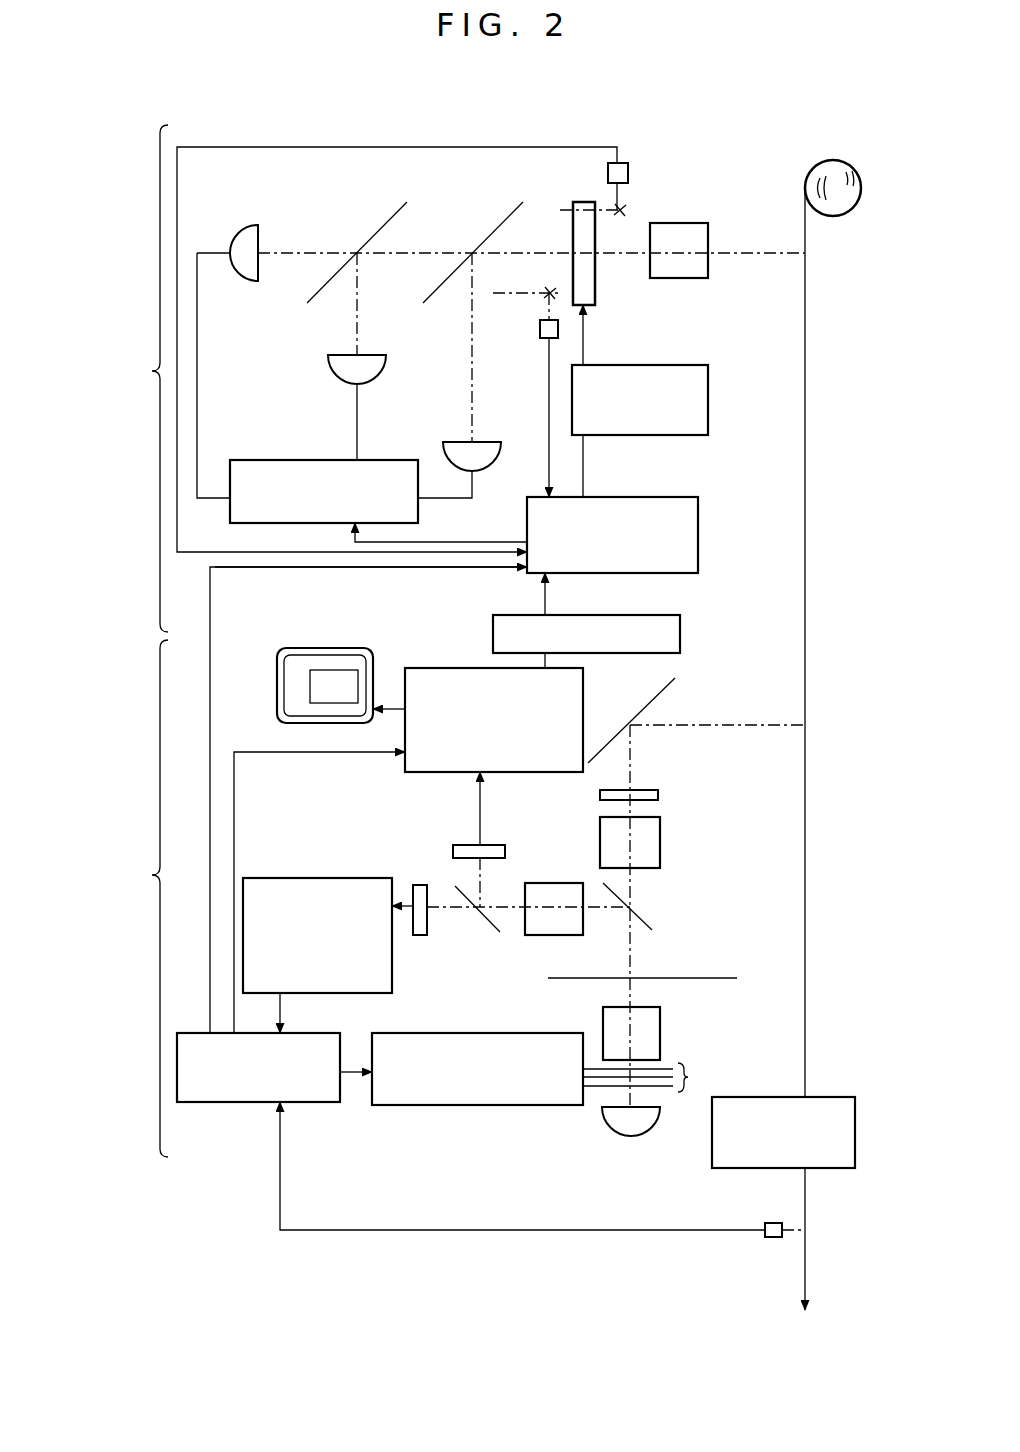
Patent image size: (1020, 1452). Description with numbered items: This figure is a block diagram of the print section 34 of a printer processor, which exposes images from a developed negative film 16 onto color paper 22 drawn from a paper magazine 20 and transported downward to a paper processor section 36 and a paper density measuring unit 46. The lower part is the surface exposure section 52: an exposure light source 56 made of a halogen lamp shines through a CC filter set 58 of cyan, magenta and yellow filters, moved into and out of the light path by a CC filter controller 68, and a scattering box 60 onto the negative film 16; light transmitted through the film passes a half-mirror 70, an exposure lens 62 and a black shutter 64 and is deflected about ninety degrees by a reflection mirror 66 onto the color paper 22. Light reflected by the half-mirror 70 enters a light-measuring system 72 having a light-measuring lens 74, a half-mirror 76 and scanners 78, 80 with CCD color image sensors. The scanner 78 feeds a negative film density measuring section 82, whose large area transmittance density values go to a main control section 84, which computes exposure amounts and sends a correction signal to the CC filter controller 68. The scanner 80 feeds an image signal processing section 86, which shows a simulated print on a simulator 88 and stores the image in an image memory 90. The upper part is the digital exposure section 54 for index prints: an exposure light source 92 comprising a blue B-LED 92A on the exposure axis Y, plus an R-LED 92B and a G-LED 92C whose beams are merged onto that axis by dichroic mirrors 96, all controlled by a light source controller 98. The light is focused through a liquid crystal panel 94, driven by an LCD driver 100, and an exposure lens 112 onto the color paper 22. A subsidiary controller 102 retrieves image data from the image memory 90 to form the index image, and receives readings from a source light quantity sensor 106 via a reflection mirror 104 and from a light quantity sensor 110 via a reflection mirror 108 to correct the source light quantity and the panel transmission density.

The negative film 16 is at (712, 977).
The paper magazine 20 is at (835, 216).
The color paper 22 is at (805, 432).
The print section 34 is at (138, 237).
The paper processor section 36 is at (790, 1168).
The paper density measuring unit 46 is at (770, 1240).
The surface exposure section 52 is at (135, 890).
The digital exposure section 54 is at (143, 386).
The exposure light source 56 is at (655, 1118).
The CC filter set 58 is at (656, 1077).
The scattering box 60 is at (660, 1032).
The exposure lens 62 is at (660, 845).
The black shutter 64 is at (658, 795).
The reflection mirror 66 is at (640, 712).
The CC filter controller 68 is at (493, 1105).
The half-mirror 70 is at (635, 910).
The light-measuring system 72 is at (444, 958).
The light-measuring lens 74 is at (550, 883).
The half-mirror 76 is at (492, 930).
The scanner 78 is at (420, 885).
The scanner 80 is at (455, 849).
The negative film density measuring section 82 is at (315, 878).
The main control section 84 is at (341, 1098).
The image signal processing section 86 is at (440, 668).
The simulator 88 is at (348, 648).
The image memory 90 is at (680, 637).
The exposure light source 92 is at (358, 340).
The B-LED 92A is at (252, 228).
The R-LED 92B is at (348, 378).
The G-LED 92C is at (452, 454).
The liquid crystal panel 94 is at (595, 282).
The dichroic mirrors 96 is at (394, 216).
The light source controller 98 is at (306, 460).
The LCD driver 100 is at (708, 400).
The subsidiary controller 102 is at (698, 530).
The reflection mirror 104 is at (552, 294).
The source light quantity sensor 106 is at (540, 330).
The reflection mirror 108 is at (626, 210).
The light quantity sensor 110 is at (628, 172).
The exposure lens 112 is at (708, 268).